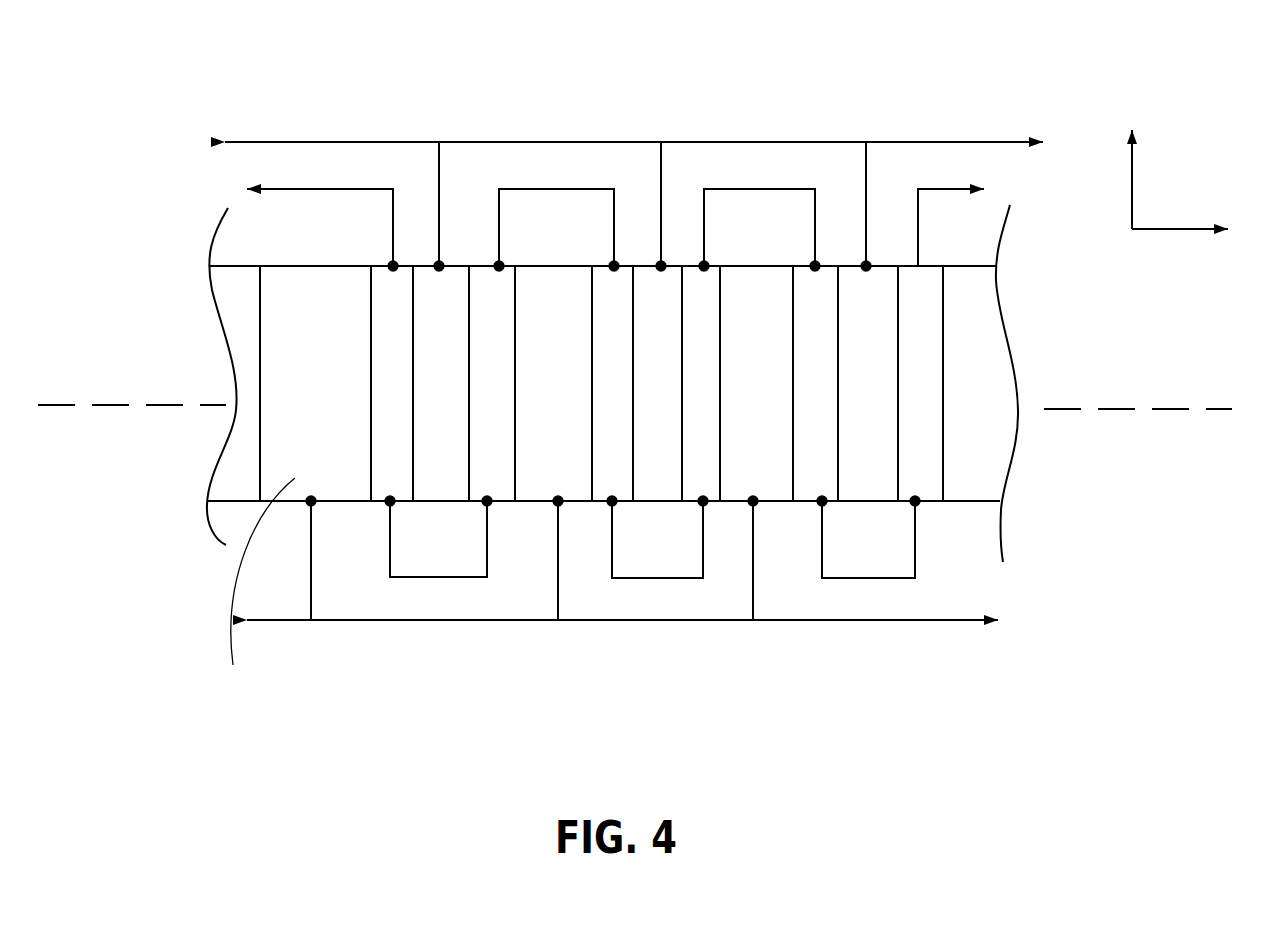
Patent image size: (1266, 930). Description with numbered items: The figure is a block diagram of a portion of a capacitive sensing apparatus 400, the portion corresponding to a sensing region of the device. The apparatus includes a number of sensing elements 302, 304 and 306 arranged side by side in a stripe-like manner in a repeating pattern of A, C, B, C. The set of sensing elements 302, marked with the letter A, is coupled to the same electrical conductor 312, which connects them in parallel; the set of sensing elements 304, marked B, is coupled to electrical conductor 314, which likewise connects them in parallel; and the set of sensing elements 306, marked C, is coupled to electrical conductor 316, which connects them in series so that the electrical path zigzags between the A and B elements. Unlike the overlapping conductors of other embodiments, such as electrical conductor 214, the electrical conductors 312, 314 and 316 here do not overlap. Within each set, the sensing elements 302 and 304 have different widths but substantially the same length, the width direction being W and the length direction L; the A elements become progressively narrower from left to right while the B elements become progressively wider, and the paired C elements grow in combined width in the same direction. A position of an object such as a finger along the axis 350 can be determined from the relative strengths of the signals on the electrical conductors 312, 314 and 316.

The capacitive sensing apparatus 400 is at (685, 46).
The electrical conductor 214 is at (1014, 197).
The sensing elements 302 is at (526, 383).
The sensing elements 304 is at (655, 383).
The sensing elements 306 is at (663, 383).
The electrical conductor 314 is at (936, 138).
The electrical conductor 312 is at (796, 628).
The electrical conductor 316 is at (250, 182).
The axis 350 is at (1062, 413).